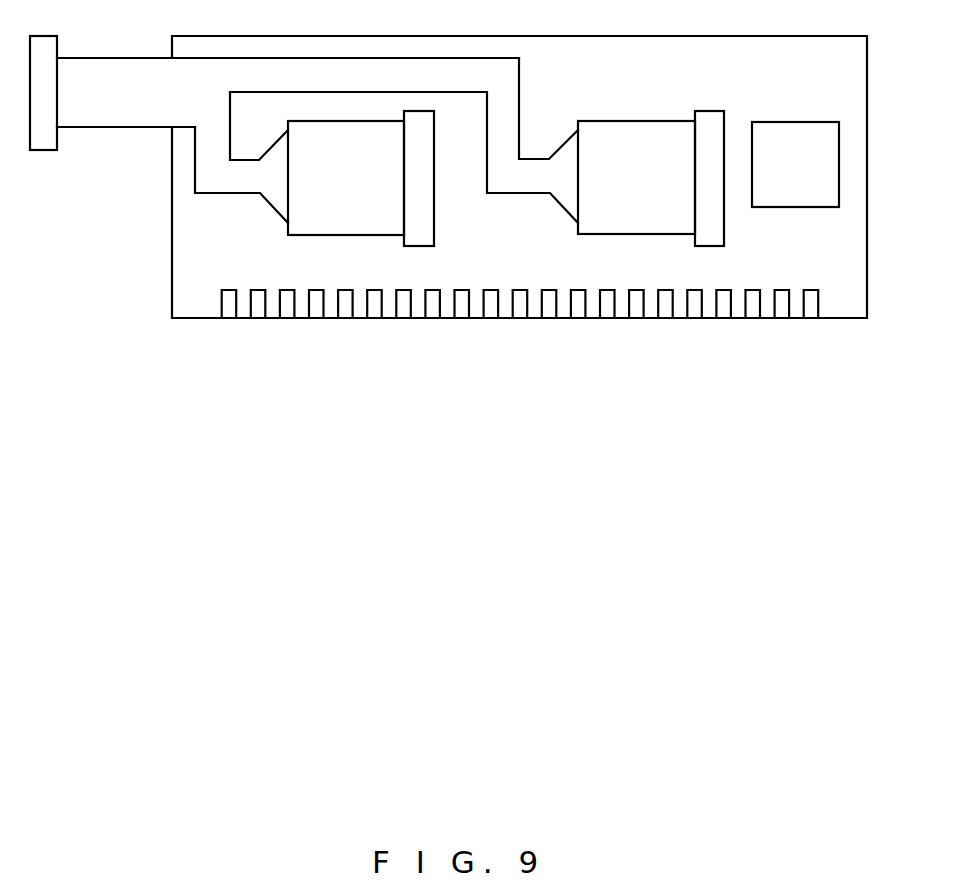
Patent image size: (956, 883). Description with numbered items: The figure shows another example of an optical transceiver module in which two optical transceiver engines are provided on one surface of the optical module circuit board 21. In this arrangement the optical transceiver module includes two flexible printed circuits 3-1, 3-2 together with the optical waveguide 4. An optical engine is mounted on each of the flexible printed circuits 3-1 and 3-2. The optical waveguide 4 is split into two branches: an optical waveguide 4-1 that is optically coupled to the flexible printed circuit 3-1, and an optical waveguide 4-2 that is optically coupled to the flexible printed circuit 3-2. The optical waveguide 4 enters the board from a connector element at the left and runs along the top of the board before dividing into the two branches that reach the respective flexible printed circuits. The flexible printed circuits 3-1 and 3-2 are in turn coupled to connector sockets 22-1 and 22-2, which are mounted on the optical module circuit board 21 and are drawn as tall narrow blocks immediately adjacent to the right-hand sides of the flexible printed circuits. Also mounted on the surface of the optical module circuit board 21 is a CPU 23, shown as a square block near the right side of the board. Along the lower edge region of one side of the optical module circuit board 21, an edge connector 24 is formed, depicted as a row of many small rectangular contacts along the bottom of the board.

The optical module circuit board 21 is at (172, 288).
The optical waveguide 4 is at (116, 128).
The optical waveguide 4-1 is at (221, 194).
The optical waveguide 4-2 is at (521, 81).
The flexible printed circuit 3-1 is at (338, 236).
The flexible printed circuit 3-2 is at (638, 235).
The connector socket 22-1 is at (420, 247).
The connector socket 22-2 is at (712, 247).
The CPU 23 is at (805, 122).
The edge connector 24 is at (812, 290).